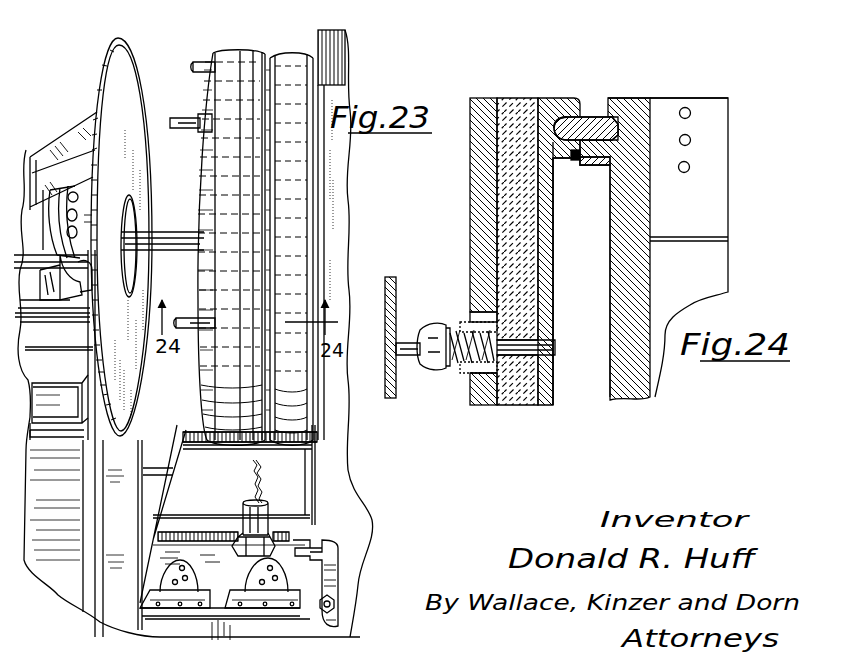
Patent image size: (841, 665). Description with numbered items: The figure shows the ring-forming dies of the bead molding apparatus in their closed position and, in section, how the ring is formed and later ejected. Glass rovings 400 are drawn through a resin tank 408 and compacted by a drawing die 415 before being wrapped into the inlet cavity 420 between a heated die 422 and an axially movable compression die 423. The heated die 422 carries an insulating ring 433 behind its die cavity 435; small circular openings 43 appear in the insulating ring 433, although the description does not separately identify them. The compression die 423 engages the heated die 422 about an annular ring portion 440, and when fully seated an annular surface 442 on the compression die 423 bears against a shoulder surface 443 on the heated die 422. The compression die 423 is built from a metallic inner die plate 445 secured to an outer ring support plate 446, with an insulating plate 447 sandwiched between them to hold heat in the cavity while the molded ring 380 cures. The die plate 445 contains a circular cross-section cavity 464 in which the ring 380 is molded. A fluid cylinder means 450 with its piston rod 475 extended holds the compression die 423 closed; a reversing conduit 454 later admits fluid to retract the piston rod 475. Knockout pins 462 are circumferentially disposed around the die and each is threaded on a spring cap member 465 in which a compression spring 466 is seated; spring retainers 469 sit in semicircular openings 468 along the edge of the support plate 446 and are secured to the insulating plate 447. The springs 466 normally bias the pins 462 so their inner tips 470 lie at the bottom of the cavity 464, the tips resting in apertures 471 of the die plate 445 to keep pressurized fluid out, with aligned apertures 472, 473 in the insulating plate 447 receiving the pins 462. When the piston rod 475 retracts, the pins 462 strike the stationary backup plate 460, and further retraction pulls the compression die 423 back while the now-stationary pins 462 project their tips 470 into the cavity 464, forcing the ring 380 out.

In FIG. 23, the backup plate 460 is at (122, 72).
In FIG. 24, the backup plate 460 is at (394, 278).
In FIG. 23, the knockout pins 462 is at (200, 62).
In FIG. 24, the knockout pins 462 is at (410, 357).
In FIG. 23, the compression die 423 is at (240, 51).
In FIG. 24, the compression die 423 is at (548, 94).
In FIG. 23, the heated die 422 is at (297, 56).
In FIG. 24, the heated die 422 is at (652, 97).
In FIG. 23, the fluid cylinder means 450 is at (40, 200).
In FIG. 23, the semicircular openings 468 is at (200, 129).
In FIG. 24, the semicircular openings 468 is at (470, 318).
In FIG. 23, the piston rod 475 is at (165, 232).
In FIG. 23, the reversing conduit 454 is at (33, 260).
In FIG. 23, the glass rovings 400 is at (248, 490).
In FIG. 23, the drawing die 415 is at (270, 532).
In FIG. 23, the resin tank 408 is at (225, 599).
In FIG. 24, the molded ring 380 is at (583, 116).
In FIG. 24, the inlet cavity 420 is at (616, 102).
In FIG. 24, the die cavity 435 is at (651, 95).
In FIG. 24, the holes 43 is at (690, 166).
In FIG. 24, the insulating ring 433 is at (712, 172).
In FIG. 24, the shoulder surface 443 is at (633, 163).
In FIG. 24, the circular cross-section cavity 464 is at (556, 130).
In FIG. 24, the outer ring support plate 446 is at (480, 198).
In FIG. 24, the insulating plate 447 is at (516, 218).
In FIG. 24, the annular surface 442 is at (570, 166).
In FIG. 24, the annular ring portion 440 is at (597, 168).
In FIG. 24, the inner die plate 445 is at (552, 267).
In FIG. 24, the spring retainers 469 is at (466, 322).
In FIG. 24, the spring cap member 465 is at (390, 350).
In FIG. 24, the inner tips 470 is at (550, 350).
In FIG. 24, the compression spring 466 is at (456, 362).
In FIG. 24, the aligned aperture 473 is at (472, 378).
In FIG. 24, the aligned aperture 472 is at (512, 358).
In FIG. 24, the apertures 471 is at (558, 358).